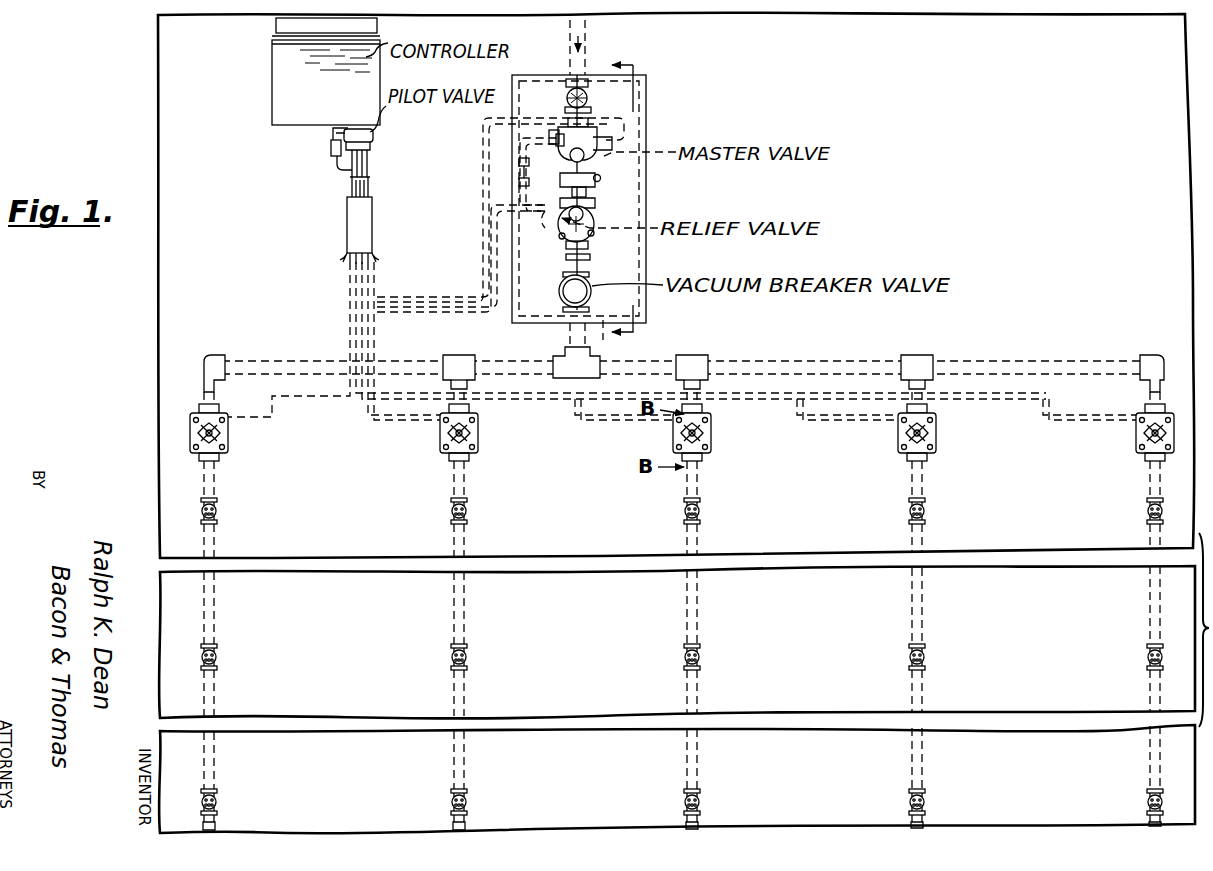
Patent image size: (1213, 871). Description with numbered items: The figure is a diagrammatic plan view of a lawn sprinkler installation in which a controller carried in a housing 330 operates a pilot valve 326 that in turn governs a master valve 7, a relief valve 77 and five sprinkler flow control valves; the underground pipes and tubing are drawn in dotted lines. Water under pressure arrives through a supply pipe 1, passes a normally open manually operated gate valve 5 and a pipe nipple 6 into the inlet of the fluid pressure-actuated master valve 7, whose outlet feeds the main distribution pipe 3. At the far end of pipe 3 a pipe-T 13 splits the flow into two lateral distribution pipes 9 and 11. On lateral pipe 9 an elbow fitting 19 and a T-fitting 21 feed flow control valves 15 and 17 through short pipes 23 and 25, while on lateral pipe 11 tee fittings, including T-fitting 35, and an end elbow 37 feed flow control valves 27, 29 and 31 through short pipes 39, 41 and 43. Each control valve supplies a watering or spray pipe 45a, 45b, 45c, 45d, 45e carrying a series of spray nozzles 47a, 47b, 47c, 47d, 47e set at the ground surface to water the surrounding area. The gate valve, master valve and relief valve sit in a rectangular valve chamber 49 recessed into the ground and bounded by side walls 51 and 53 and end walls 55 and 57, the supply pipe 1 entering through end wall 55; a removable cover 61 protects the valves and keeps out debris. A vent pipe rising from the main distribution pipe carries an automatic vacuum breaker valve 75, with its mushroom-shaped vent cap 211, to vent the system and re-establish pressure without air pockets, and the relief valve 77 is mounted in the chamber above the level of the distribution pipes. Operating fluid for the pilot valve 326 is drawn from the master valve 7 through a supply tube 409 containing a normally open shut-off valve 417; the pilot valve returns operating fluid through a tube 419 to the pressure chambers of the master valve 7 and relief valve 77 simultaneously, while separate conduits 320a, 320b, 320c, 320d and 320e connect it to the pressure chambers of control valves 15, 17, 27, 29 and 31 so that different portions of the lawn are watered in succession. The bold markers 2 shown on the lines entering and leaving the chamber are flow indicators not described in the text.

The supply pipe 1 is at (568, 34).
The flow path marker 2 is at (646, 192).
The main distribution pipe 3 is at (571, 350).
The manually operated valve 5 is at (560, 92).
The pipe nipple 6 is at (570, 121).
The master valve 7 is at (562, 163).
The lateral distribution pipe 9 is at (492, 362).
The lateral distribution pipe 11 is at (824, 360).
The pipe-T 13 is at (546, 356).
The flow control valve 15 is at (231, 440).
The flow control valve 17 is at (438, 435).
The elbow fitting 19 is at (206, 356).
The T-fitting 21 is at (452, 356).
The short pipe 23 is at (703, 360).
The short pipe 25 is at (446, 372).
The flow control valve 27 is at (713, 432).
The flow control valve 29 is at (897, 435).
The flow control valve 31 is at (1135, 437).
The T-fitting 35 is at (915, 352).
The elbow 37 is at (1150, 353).
The short pipe 39 is at (718, 392).
The short pipe 41 is at (930, 407).
The short pipe 43 is at (1143, 398).
The watering or spray pipe 45a is at (216, 530).
The watering or spray pipe 45b is at (447, 532).
The watering or spray pipe 45c is at (684, 540).
The watering or spray pipe 45d is at (904, 540).
The watering or spray pipe 45e is at (1142, 540).
The spray nozzles 47a is at (219, 512).
The spray nozzles 47b is at (452, 507).
The spray nozzles 47c is at (702, 508).
The spray nozzles 47d is at (910, 508).
The spray nozzles 47e is at (1148, 508).
The valve chamber 49 is at (630, 272).
The side wall 51 is at (648, 94).
The side wall 53 is at (511, 80).
The end wall 55 is at (566, 78).
The end wall 57 is at (620, 339).
The cover 61 is at (630, 210).
The vacuum breaker valve 75 is at (594, 292).
The relief valve 77 is at (533, 234).
The vent cap 211 is at (561, 288).
The pilot valve 326 is at (377, 140).
The housing 330 is at (278, 72).
The supply tube 409 is at (332, 134).
The shut-off valve 417 is at (333, 160).
The tube 419 is at (490, 256).
The conduit or tube 320a is at (288, 405).
The conduit or tube 320b is at (362, 430).
The conduit or tube 320c is at (596, 420).
The conduit or tube 320d is at (812, 425).
The conduit or tube 320e is at (1032, 413).